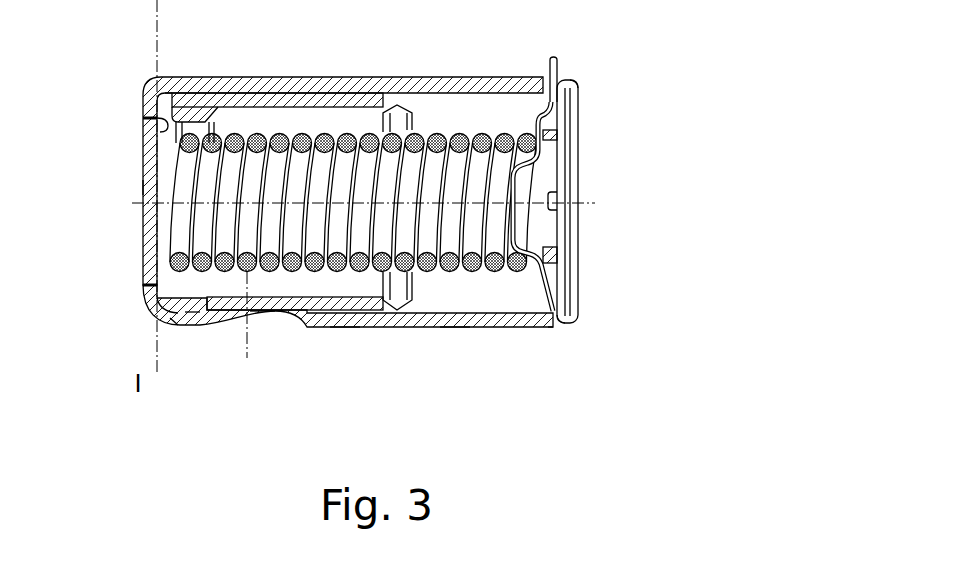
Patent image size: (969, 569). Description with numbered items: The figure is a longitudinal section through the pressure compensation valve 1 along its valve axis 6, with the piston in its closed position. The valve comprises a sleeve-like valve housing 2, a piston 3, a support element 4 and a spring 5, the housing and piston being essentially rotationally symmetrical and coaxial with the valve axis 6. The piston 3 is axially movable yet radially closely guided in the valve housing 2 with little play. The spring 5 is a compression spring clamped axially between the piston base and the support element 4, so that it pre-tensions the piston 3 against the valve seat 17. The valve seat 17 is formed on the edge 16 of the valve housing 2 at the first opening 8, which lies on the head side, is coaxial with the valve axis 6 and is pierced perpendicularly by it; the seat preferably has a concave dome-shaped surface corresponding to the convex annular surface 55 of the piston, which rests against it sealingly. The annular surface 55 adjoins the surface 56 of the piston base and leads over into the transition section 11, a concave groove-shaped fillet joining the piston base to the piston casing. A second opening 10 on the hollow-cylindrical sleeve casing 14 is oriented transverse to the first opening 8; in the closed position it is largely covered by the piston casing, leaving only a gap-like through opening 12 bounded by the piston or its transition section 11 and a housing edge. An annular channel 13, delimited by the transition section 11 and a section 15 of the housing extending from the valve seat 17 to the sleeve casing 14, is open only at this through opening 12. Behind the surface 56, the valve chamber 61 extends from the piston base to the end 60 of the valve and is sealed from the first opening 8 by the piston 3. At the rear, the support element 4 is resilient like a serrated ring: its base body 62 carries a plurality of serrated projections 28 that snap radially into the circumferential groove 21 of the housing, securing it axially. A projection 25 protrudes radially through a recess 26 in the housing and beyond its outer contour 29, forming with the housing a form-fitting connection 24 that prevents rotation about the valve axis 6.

The pressure compensation valve 1 is at (720, 118).
The valve housing 2 is at (422, 318).
The piston 3 is at (262, 77).
The support element 4 is at (536, 140).
The spring 5 is at (437, 133).
The valve axis 6 is at (562, 202).
The first opening 8 is at (153, 168).
The second opening 10 is at (290, 316).
The transition section 11 is at (195, 77).
The gap-like through opening 12 is at (193, 326).
The annular channel 13 is at (147, 291).
The sleeve casing 14 is at (348, 324).
The section of the valve housing 15 is at (170, 324).
The edge of the valve housing 16 is at (147, 303).
The valve seat 17 is at (157, 133).
The circumferential groove 21 is at (580, 322).
The form-fitting connection 24 is at (566, 79).
The projection 25 is at (556, 58).
The recess 26 is at (578, 88).
The serrated projections 28 is at (563, 128).
The outer contour 29 is at (457, 320).
The annular surface 55 is at (173, 77).
The surface of the piston base 56 is at (153, 187).
The end of the valve 60 is at (566, 329).
The valve chamber 61 is at (486, 292).
The base body 62 is at (521, 136).